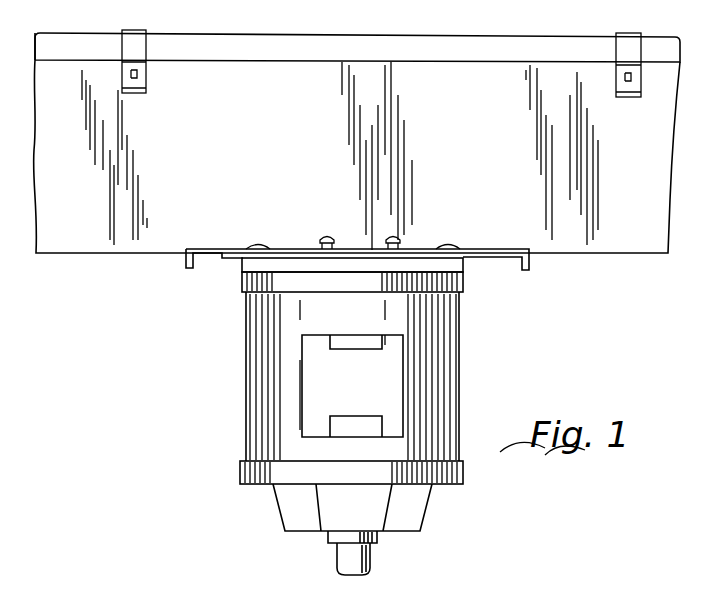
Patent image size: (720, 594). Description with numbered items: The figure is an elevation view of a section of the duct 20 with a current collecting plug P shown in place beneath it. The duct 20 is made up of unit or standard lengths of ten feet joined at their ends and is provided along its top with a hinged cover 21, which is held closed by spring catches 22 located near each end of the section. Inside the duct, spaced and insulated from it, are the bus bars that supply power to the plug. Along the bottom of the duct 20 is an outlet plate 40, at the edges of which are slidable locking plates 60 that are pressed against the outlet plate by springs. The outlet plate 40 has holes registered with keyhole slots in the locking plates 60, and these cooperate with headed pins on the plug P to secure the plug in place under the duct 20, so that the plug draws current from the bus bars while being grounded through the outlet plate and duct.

The duct 20 is at (357, 143).
The hinged cover 21 is at (320, 43).
The spring catches 22 is at (142, 48).
The slidable locking plates 60 is at (487, 253).
The outlet plate 40 is at (496, 259).
The plug P is at (452, 355).